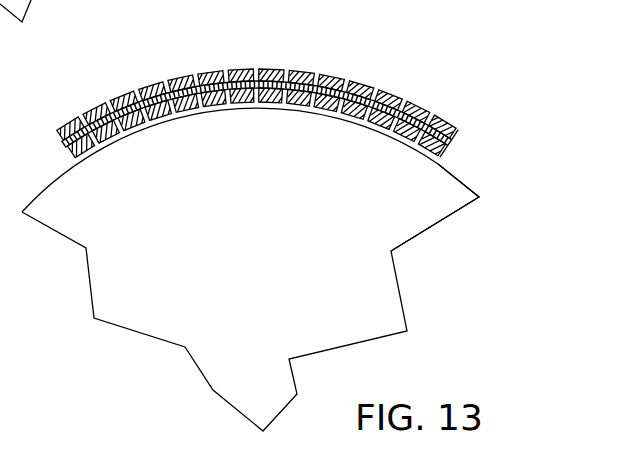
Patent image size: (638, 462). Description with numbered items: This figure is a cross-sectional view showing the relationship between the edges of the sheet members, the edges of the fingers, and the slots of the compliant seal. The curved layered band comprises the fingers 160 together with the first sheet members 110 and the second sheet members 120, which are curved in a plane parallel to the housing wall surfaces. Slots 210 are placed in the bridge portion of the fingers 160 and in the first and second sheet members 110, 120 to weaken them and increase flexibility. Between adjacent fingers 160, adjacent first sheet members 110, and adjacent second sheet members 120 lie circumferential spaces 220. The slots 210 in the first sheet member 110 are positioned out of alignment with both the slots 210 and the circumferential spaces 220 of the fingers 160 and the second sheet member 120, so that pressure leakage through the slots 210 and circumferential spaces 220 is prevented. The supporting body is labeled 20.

The base body 20 is at (118, 300).
The first flexible sheet member 110 is at (448, 155).
The second flexible sheet member 120 is at (455, 132).
The finger 160 is at (480, 192).
The slot 210 is at (368, 84).
The circumferential space 220 is at (304, 73).